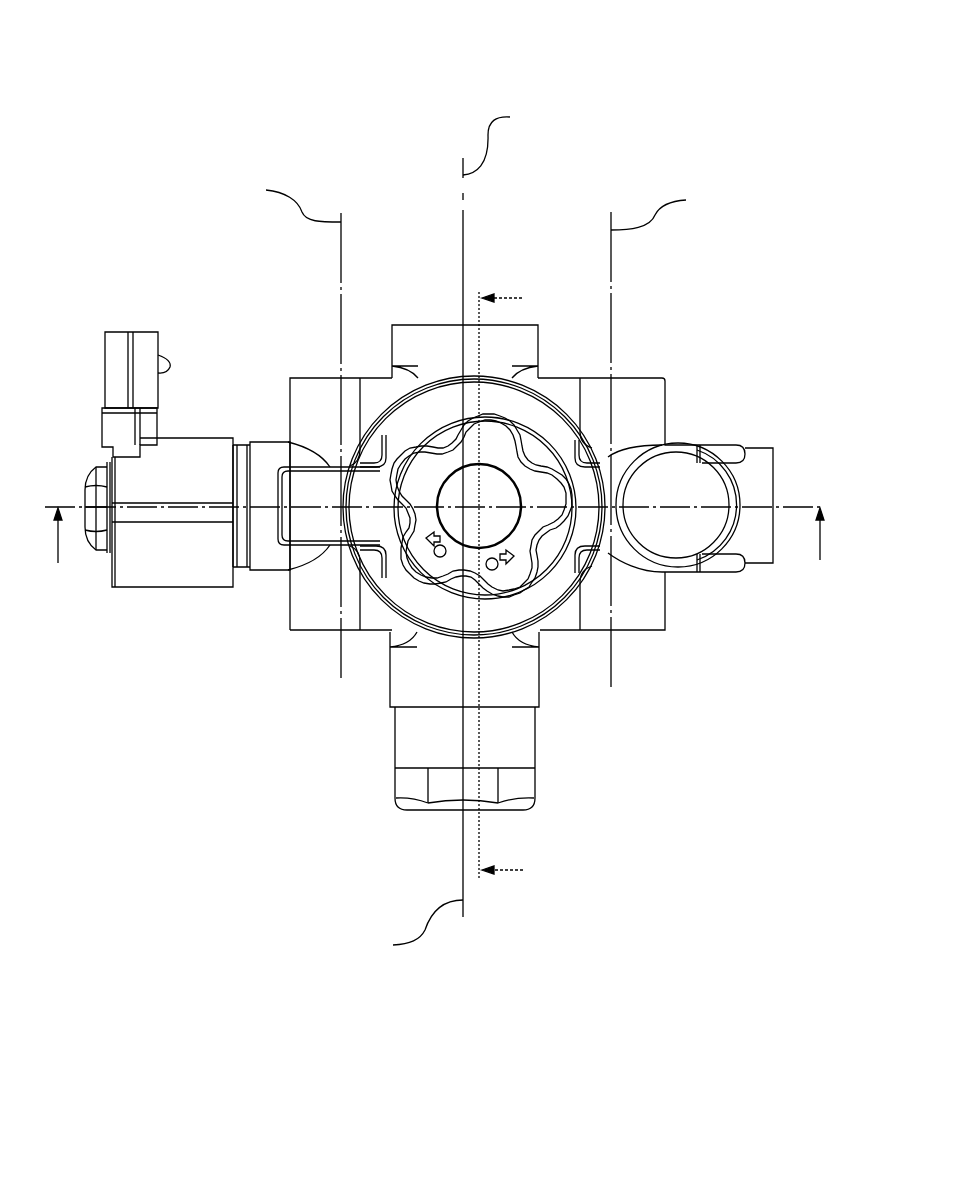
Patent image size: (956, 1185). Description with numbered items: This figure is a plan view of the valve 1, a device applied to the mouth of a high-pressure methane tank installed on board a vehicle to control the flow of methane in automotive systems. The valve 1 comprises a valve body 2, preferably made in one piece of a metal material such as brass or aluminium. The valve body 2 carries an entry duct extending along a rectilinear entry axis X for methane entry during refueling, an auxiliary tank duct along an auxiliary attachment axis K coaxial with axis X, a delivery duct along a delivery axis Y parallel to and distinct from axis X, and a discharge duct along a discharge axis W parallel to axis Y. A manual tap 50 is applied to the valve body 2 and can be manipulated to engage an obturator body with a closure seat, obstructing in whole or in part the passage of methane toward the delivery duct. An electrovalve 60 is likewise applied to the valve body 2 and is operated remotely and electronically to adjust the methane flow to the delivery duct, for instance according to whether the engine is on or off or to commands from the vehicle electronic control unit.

The valve 1 is at (373, 152).
The valve body 2 is at (636, 375).
The manual tap 50 is at (410, 445).
The electrovalve 60 is at (144, 588).